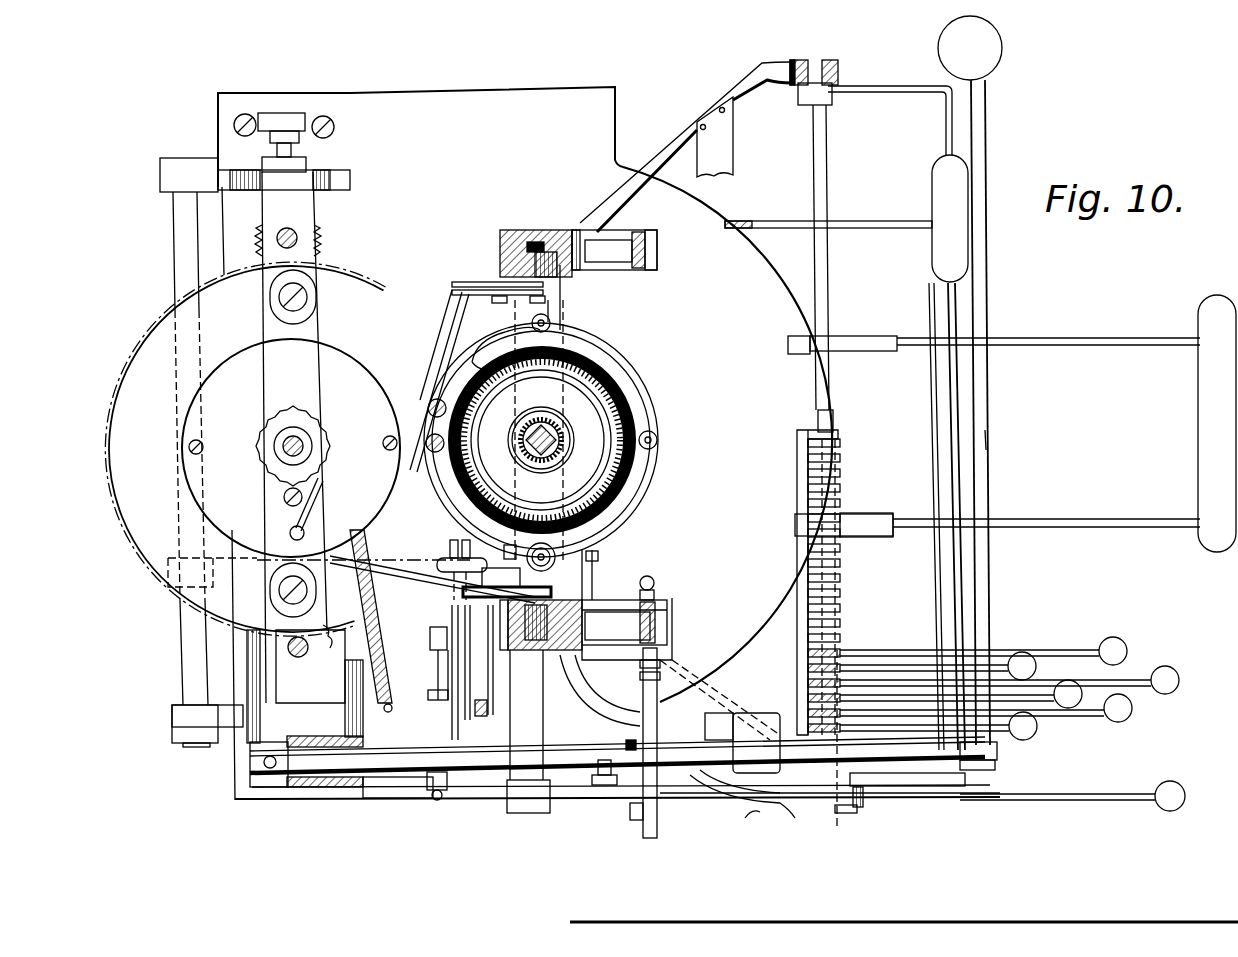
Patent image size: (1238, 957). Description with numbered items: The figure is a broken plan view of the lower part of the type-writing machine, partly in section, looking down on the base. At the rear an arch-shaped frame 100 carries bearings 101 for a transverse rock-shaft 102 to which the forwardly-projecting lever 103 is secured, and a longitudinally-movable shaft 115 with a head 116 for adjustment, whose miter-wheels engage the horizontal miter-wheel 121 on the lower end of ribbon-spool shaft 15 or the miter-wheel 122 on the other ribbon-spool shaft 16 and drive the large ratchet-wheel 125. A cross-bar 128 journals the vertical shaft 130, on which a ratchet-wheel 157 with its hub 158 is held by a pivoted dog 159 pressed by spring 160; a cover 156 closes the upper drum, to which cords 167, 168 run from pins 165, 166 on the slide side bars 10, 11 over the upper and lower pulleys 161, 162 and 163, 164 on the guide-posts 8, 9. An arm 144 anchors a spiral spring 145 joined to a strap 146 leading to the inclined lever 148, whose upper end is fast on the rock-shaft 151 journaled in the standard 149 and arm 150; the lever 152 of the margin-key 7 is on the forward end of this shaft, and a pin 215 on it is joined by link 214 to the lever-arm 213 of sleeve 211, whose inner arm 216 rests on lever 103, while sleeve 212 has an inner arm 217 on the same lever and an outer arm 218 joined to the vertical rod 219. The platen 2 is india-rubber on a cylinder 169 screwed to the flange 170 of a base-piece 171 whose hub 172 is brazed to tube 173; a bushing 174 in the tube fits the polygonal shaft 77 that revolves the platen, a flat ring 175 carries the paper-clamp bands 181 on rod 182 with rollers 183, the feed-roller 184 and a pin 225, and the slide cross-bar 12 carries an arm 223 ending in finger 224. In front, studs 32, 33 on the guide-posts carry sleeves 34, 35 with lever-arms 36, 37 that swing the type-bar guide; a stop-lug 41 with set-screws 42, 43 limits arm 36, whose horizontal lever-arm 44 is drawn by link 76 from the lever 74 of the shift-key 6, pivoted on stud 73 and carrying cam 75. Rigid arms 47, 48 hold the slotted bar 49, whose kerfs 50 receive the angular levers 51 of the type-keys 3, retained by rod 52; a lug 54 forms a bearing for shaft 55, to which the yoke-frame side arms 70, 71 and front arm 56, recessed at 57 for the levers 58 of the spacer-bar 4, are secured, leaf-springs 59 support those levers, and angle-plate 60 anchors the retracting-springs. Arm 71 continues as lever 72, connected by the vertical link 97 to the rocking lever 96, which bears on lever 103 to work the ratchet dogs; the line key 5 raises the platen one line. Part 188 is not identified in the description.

The platen 2 is at (625, 485).
The type-keys 3 is at (1022, 650).
The spacer-bar 4 is at (1200, 463).
The platen-raising or line key 5 is at (950, 218).
The shift-key 6 is at (1158, 790).
The margin-key 7 is at (970, 393).
The guide-post 8 is at (514, 650).
The guide-post 9 is at (512, 230).
The side bar of platen-supporting slide 10 is at (550, 605).
The side bar of platen-supporting slide 11 is at (538, 242).
The cross-bar 12 is at (552, 292).
The ribbon-spool shaft 15 is at (297, 235).
The ribbon-spool shaft 16 is at (303, 655).
The stud 32 is at (590, 607).
The stud 33 is at (575, 230).
The sleeve 34 is at (617, 626).
The sleeve 35 is at (614, 250).
The lever-arm 36 is at (660, 624).
The lever-arm 37 is at (642, 270).
The stop-lug 41 is at (666, 656).
The set-screw 42 is at (655, 584).
The set-screw 43 is at (655, 670).
The horizontal lever-arm 44 is at (657, 750).
The rigid arm 47 is at (672, 686).
The rigid arm 48 is at (690, 150).
The slotted bar 49 is at (800, 656).
The kerfs 50 is at (842, 443).
The type-key levers 51 is at (885, 652).
The retaining-rod 52 is at (834, 422).
The lug 54 is at (830, 60).
The transverse shaft 55 is at (825, 163).
The front transverse arm of yoke-frame 56 is at (948, 389).
The recesses 57 is at (982, 336).
The spacer-bar levers 58 is at (1050, 345).
The bent leaf-springs 59 is at (800, 350).
The transverse angle-plate 60 is at (733, 161).
The side arm of yoke-frame 70 is at (886, 86).
The side arm of yoke-frame 71 is at (912, 780).
The lever 72 is at (720, 795).
The stud 73 is at (528, 731).
The shift-key lever 74 is at (990, 801).
The cam 75 is at (755, 820).
The link 76 is at (638, 815).
The polygonal-faced vertical shaft 77 is at (556, 430).
The rocking lever 96 is at (588, 577).
The vertical link 97 is at (612, 786).
The arch-shaped frame 100 is at (294, 437).
The bearings 101 is at (207, 165).
The rock-shaft 102 is at (185, 493).
The lever 103 is at (598, 556).
The longitudinally-movable shaft 115 is at (300, 150).
The head 116 is at (287, 114).
The teeth 121 is at (318, 236).
The miter-wheel 122 is at (328, 638).
The large ratchet-wheel 125 is at (245, 449).
The cross-bar 128 is at (293, 443).
The vertical shaft 130 is at (305, 444).
The arm 144 is at (376, 710).
The spiral spring 145 is at (378, 660).
The metal strap 146 is at (258, 594).
The inclined lever 148 is at (262, 688).
The standard 149 is at (319, 683).
The arm 150 is at (712, 716).
The rock-shaft 151 is at (617, 762).
The margin-key lever 152 is at (990, 440).
The drum cover 156 is at (228, 364).
The ratchet-wheel 157 is at (262, 438).
The hub 158 is at (293, 427).
The pivoted dog 159 is at (284, 492).
The spring 160 is at (308, 515).
The upper grooved pulley 161 is at (476, 672).
The lower grooved pulley 162 is at (455, 590).
The upper grooved pulley 163 is at (462, 282).
The lower grooved pulley 164 is at (464, 315).
The pin 165 is at (527, 605).
The pin 166 is at (560, 312).
The cord 167 is at (378, 556).
The cord 168 is at (420, 412).
The hollow metal cylinder 169 is at (492, 375).
The annular vertical flange 170 is at (455, 440).
The circular base-piece 171 is at (541, 440).
The central hub 172 is at (562, 455).
The vertical cylindrical tube 173 is at (560, 438).
The bushing 174 is at (540, 408).
The flat ring 175 is at (655, 470).
The paper-clamps 181 is at (630, 382).
The vertical rod 182 is at (430, 450).
The rollers 183 is at (528, 321).
The feed-roller 184 is at (447, 400).
The rod 188 is at (874, 222).
The outer sleeve 211 is at (440, 639).
The inner sleeve 212 is at (472, 680).
The outer lever-arm 213 is at (436, 672).
The link 214 is at (432, 737).
The pin 215 is at (420, 783).
The inner lever-arm 216 is at (447, 615).
The inner lever-arm 217 is at (462, 564).
The outer lever-arm 218 is at (470, 688).
The vertical rod 219 is at (480, 715).
The arm 223 is at (499, 576).
The finger 224 is at (372, 554).
The pin 225 is at (515, 540).